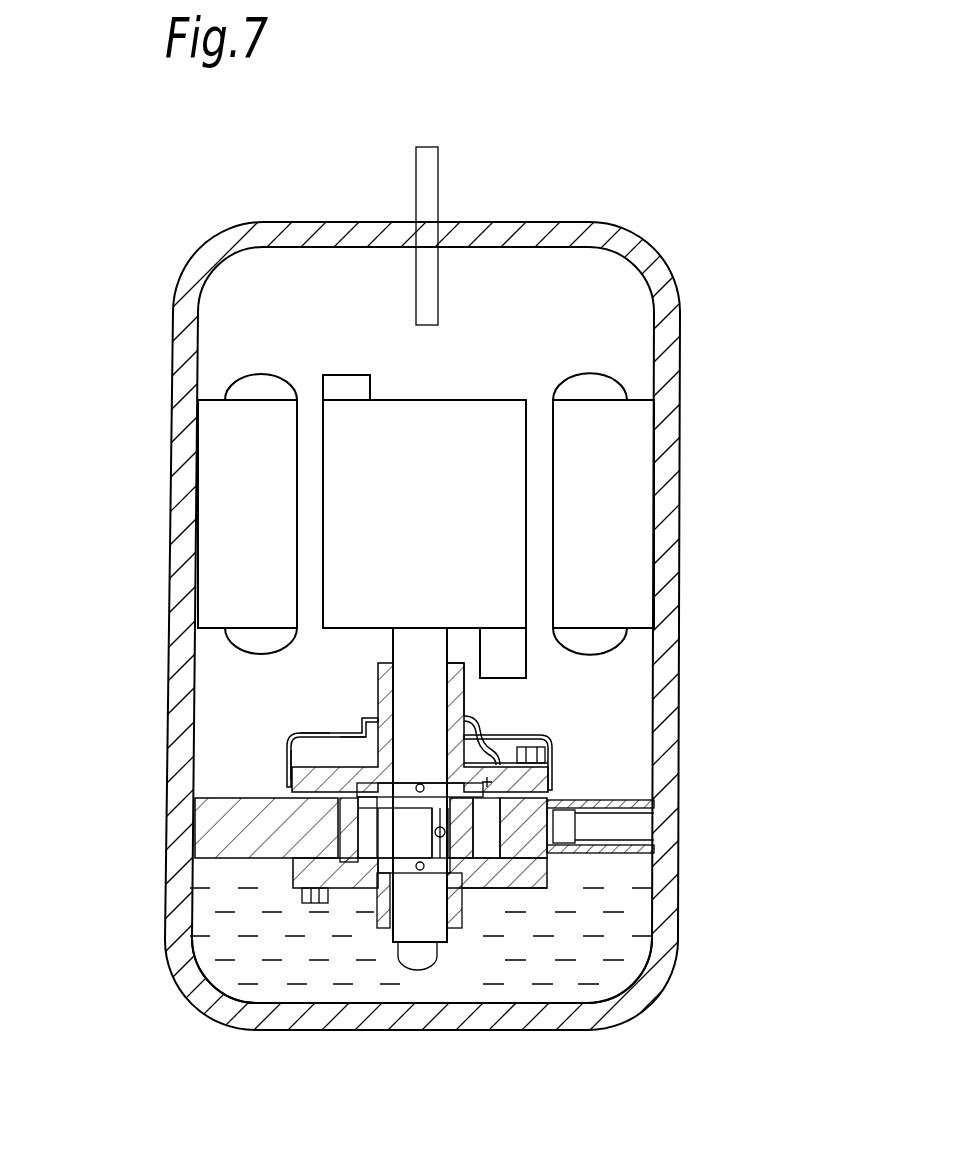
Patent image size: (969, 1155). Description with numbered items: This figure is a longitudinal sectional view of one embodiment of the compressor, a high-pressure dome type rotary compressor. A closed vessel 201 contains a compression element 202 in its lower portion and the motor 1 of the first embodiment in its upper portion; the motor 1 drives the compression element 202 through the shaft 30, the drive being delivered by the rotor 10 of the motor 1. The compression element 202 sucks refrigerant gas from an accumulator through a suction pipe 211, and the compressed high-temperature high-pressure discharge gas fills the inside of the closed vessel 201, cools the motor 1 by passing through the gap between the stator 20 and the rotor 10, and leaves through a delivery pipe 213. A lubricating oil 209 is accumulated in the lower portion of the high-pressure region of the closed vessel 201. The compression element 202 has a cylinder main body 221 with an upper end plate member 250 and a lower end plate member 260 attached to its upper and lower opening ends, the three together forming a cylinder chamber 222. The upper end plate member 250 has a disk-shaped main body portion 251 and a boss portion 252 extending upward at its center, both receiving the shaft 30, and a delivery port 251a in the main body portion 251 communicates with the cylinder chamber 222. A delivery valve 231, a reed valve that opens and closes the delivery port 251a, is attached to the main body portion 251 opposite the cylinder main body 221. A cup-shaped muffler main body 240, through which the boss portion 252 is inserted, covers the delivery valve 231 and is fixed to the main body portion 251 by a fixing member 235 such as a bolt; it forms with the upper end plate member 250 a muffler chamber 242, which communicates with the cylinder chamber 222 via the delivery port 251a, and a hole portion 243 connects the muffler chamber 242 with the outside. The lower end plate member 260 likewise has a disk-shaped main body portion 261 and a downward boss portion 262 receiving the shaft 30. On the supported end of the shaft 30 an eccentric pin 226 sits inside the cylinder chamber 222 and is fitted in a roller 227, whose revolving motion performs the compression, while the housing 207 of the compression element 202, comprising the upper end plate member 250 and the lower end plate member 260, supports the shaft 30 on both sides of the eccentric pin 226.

The motor 1 is at (362, 741).
The rotor 10 is at (395, 412).
The stator 20 is at (592, 420).
The shaft 30 is at (422, 653).
The closed vessel 201 is at (283, 220).
The compression element 202 is at (196, 833).
The housing 207 is at (283, 892).
The lubricating oil 209 is at (632, 984).
The suction pipe 211 is at (633, 825).
The delivery pipe 213 is at (438, 178).
The cylinder main body 221 is at (215, 852).
The cylinder chamber 222 is at (497, 848).
The eccentric pin 226 is at (358, 885).
The roller 227 is at (492, 835).
The delivery valve 231 is at (500, 752).
The fixing member 235 is at (553, 757).
The muffler main body 240 is at (311, 753).
The muffler chamber 242 is at (347, 768).
The hole portion 243 is at (278, 487).
The upper end plate member 250 is at (290, 762).
The main body portion 251 is at (298, 719).
The delivery port 251a is at (485, 783).
The boss portion 252 is at (468, 722).
The lower end plate member 260 is at (528, 906).
The main body portion 261 is at (340, 888).
The boss portion 262 is at (377, 835).